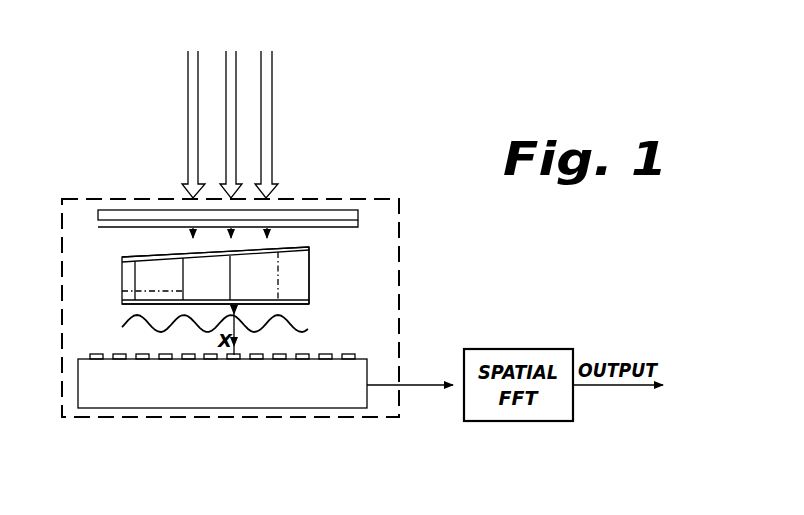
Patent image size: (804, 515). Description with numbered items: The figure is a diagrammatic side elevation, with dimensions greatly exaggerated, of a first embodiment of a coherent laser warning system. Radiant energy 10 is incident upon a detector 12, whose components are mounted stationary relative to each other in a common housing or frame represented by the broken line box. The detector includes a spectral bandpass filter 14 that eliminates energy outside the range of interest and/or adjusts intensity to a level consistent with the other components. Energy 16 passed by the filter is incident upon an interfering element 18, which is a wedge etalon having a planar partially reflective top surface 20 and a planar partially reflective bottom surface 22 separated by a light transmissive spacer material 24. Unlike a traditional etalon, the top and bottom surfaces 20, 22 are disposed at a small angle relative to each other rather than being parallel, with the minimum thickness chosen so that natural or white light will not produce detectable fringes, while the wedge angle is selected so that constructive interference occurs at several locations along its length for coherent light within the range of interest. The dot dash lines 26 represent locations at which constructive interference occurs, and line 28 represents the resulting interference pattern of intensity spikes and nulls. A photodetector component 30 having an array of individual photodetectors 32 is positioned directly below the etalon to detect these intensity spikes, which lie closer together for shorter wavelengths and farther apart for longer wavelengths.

The radiant energy 10 is at (203, 36).
The detector 12 is at (392, 194).
The spectral bandpass filter 14 is at (131, 210).
The energy passed by the filter 16 is at (176, 235).
The interfering element 18 is at (220, 280).
The top surface 20 is at (298, 243).
The bottom surface 22 is at (296, 308).
The light transmissive spacer material 24 is at (298, 278).
The dot dash lines 26 is at (120, 285).
The interference pattern line 28 is at (114, 323).
The photodetector component 30 is at (265, 363).
The individual photodetectors 32 is at (325, 356).